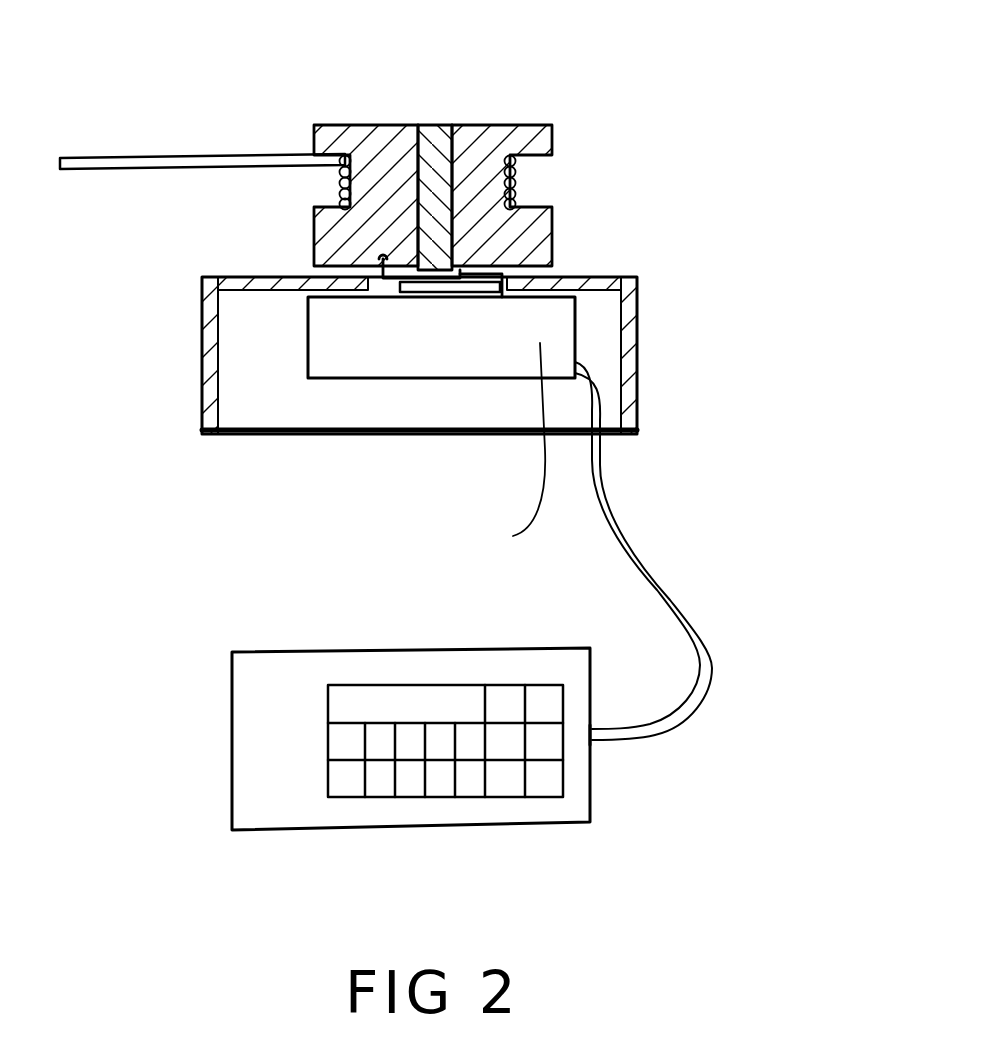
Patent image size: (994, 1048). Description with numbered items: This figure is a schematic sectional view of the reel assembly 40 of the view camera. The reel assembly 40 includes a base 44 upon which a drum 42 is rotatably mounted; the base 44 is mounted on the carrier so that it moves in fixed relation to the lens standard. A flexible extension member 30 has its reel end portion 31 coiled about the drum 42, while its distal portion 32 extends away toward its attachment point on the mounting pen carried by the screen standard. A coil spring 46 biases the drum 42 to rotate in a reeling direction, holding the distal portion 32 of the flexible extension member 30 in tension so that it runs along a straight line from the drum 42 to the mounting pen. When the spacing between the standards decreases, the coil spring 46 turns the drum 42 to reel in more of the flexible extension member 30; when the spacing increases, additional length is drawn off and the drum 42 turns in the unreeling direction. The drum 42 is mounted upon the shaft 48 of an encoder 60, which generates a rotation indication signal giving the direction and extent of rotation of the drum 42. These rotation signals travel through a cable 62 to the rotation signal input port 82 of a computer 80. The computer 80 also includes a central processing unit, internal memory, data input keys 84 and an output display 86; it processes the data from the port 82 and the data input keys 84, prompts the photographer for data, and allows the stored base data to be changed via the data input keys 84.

The flexible extension member 30 is at (205, 142).
The reel end portion 31 is at (512, 183).
The distal portion 32 is at (126, 164).
The reel assembly 40 is at (742, 304).
The drum 42 is at (517, 143).
The base 44 is at (600, 333).
The coil spring 46 is at (437, 287).
The shaft 48 is at (438, 163).
The encoder 60 is at (507, 448).
The cable 62 is at (656, 600).
The computer 80 is at (222, 762).
The rotation signal input port 82 is at (592, 738).
The data input keys 84 is at (545, 770).
The output display 86 is at (477, 706).